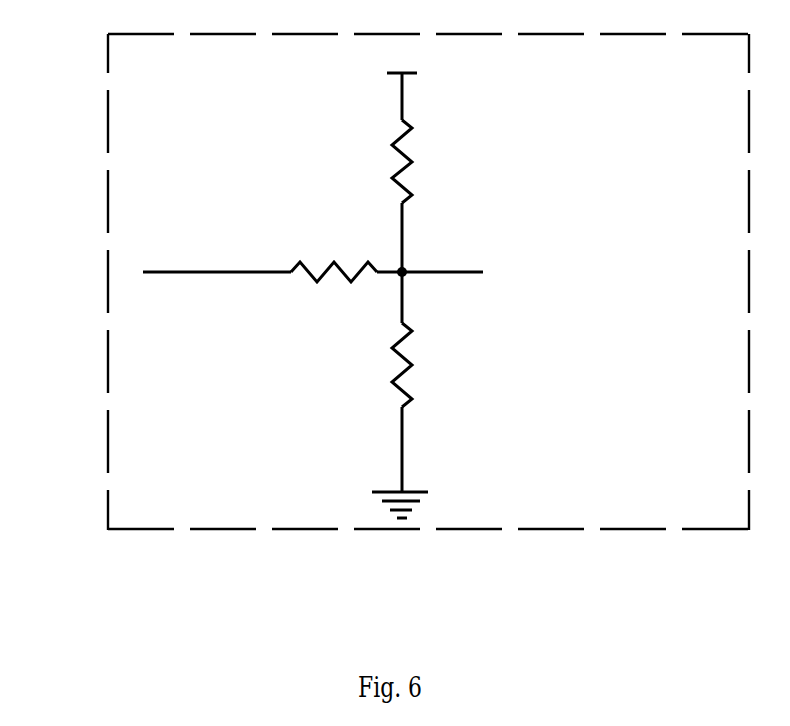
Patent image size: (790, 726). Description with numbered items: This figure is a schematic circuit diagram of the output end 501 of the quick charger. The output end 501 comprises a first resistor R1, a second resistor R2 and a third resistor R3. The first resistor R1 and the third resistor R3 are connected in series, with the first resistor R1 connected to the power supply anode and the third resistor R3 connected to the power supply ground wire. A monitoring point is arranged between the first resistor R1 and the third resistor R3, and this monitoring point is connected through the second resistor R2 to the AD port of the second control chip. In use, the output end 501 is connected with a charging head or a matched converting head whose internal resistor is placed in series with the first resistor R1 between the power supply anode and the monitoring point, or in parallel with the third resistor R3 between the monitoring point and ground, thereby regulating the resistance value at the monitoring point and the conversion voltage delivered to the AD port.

The output end 501 is at (386, 329).
The first resistor R1 is at (419, 161).
The second resistor R2 is at (333, 251).
The third resistor R3 is at (421, 365).